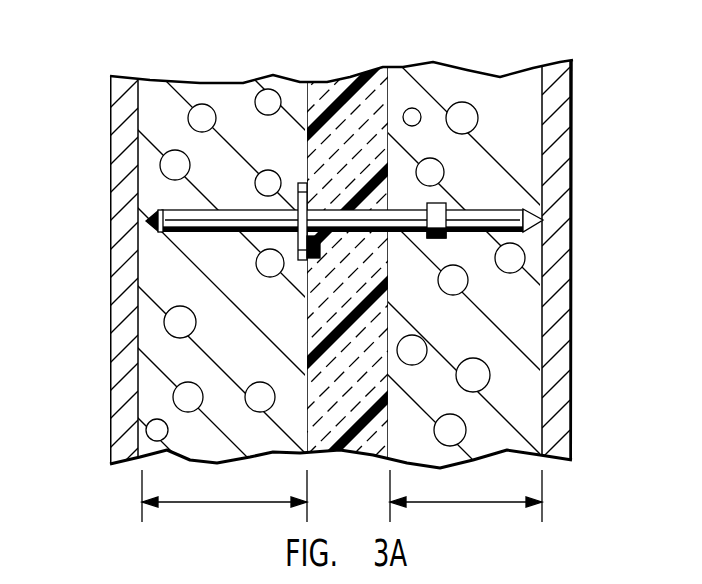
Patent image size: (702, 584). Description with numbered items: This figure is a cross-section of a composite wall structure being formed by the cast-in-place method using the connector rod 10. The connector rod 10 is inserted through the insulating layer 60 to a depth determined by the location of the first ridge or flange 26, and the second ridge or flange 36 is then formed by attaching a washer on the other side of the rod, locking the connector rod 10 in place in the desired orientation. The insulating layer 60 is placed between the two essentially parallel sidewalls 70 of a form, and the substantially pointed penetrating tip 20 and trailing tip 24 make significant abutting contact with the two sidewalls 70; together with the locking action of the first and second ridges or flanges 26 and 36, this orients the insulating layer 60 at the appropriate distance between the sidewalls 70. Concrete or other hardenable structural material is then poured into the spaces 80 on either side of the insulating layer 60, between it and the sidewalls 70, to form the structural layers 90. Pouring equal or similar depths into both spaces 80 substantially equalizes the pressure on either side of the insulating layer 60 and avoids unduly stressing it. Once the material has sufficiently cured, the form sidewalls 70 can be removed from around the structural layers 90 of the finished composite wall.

The connector rod 10 is at (483, 213).
The penetrating tip 20 is at (150, 219).
The trailing tip 24 is at (543, 218).
The first ridge or flange 26 is at (503, 286).
The second ridge or flange 36 is at (300, 187).
The insulating layer 60 is at (351, 265).
The sidewalls 70 is at (340, 272).
The spaces 80 is at (221, 502).
The structural layers 90 is at (351, 265).